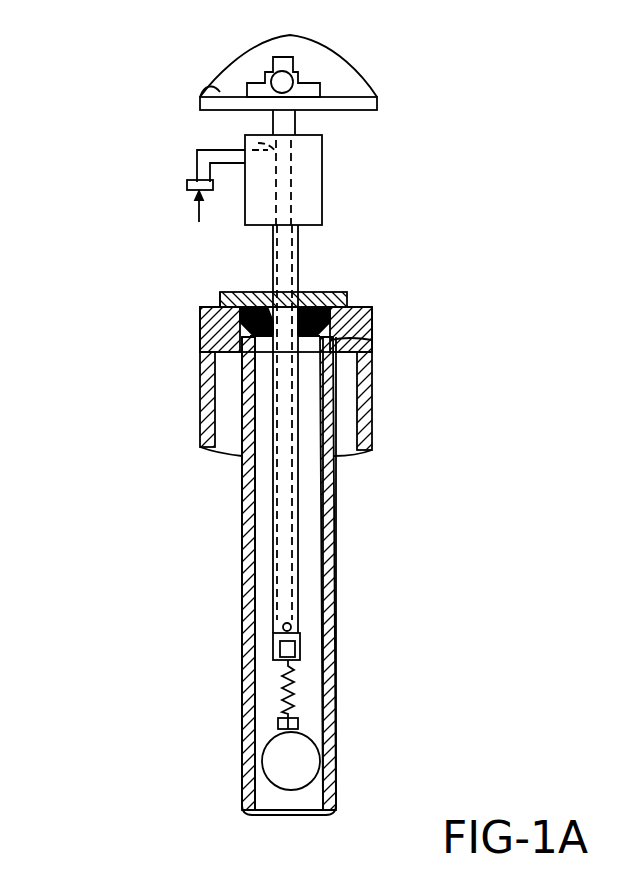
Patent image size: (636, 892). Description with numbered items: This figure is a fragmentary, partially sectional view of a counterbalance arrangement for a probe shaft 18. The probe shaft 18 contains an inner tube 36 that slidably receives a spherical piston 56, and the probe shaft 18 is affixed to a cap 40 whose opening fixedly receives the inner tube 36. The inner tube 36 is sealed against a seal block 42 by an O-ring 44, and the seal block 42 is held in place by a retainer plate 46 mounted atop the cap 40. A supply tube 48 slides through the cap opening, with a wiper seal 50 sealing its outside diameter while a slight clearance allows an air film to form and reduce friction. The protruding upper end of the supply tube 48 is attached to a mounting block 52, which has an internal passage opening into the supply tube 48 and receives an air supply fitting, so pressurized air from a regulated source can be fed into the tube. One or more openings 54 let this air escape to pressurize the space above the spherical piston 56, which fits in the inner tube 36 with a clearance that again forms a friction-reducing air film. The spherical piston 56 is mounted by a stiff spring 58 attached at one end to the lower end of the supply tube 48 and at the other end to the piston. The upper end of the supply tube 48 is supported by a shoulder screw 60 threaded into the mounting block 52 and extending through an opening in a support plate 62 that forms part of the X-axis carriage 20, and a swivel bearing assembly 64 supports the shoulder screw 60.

The probe shaft 18 is at (200, 402).
The X-axis carriage 20 is at (337, 53).
The inner tube 36 is at (336, 717).
The cap 40 is at (210, 307).
The seal block 42 is at (372, 322).
The O-ring 44 is at (367, 341).
The retainer plate 46 is at (347, 293).
The supply tube 48 is at (298, 580).
The wiper seal 50 is at (305, 293).
The mounting block 52 is at (322, 190).
The openings 54 is at (292, 627).
The spherical piston 56 is at (312, 762).
The stiff spring 58 is at (292, 680).
The shoulder screw 60 is at (295, 125).
The support plate 62 is at (220, 90).
The swivel bearing assembly 64 is at (296, 78).